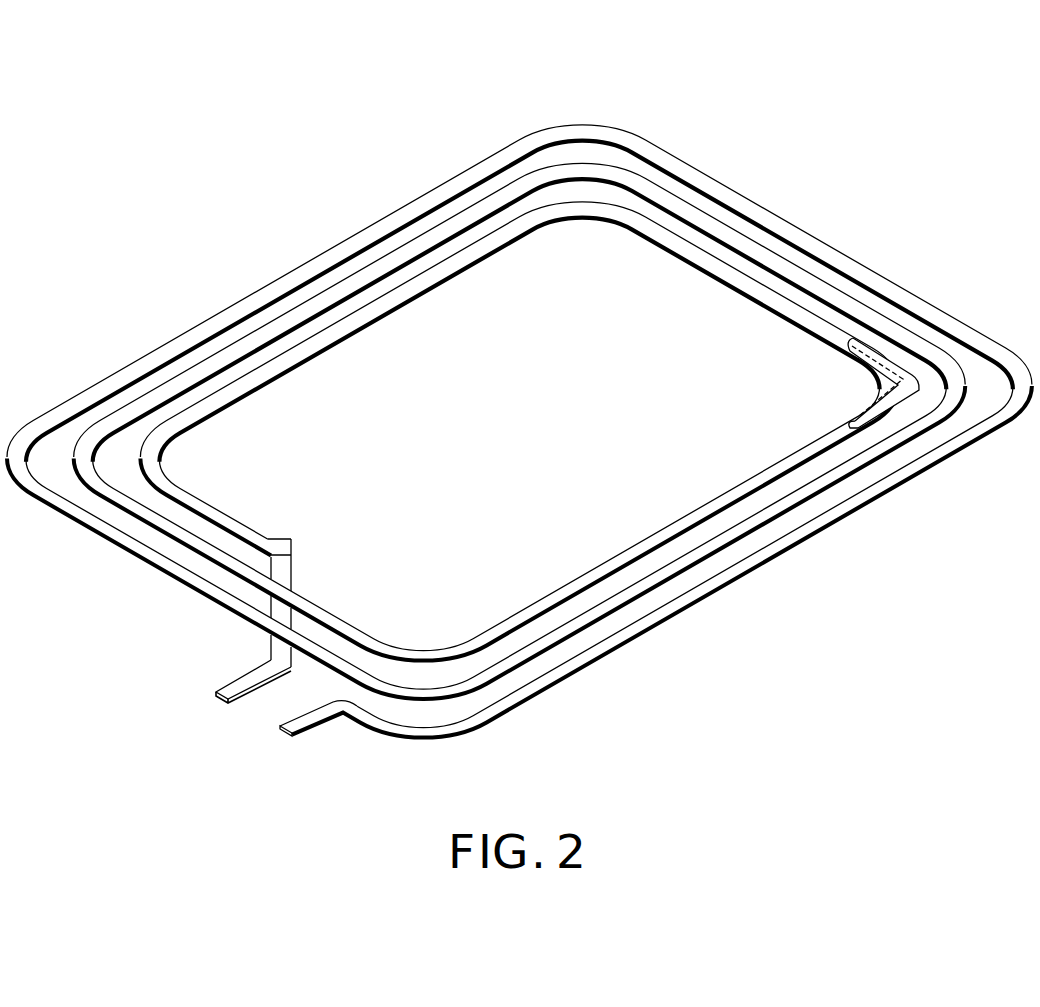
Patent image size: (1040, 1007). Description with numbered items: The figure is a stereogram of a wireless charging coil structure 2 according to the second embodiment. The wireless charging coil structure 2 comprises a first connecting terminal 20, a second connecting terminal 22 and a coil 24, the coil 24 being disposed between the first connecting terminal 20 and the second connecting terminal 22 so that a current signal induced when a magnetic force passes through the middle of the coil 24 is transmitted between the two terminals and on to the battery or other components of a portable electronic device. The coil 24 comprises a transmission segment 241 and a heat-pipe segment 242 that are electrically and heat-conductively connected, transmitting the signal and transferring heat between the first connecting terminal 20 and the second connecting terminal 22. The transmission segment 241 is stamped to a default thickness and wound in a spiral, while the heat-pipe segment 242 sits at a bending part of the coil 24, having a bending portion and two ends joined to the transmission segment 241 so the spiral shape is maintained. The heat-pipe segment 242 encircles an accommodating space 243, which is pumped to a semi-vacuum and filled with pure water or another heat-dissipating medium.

The wireless charging coil structure 2 is at (132, 82).
The first connecting terminal 20 is at (216, 696).
The second connecting terminal 22 is at (281, 737).
The coil 24 is at (636, 114).
The transmission segment 241 is at (790, 228).
The heat-pipe segment 242 is at (865, 363).
The accommodating space 243 is at (884, 368).